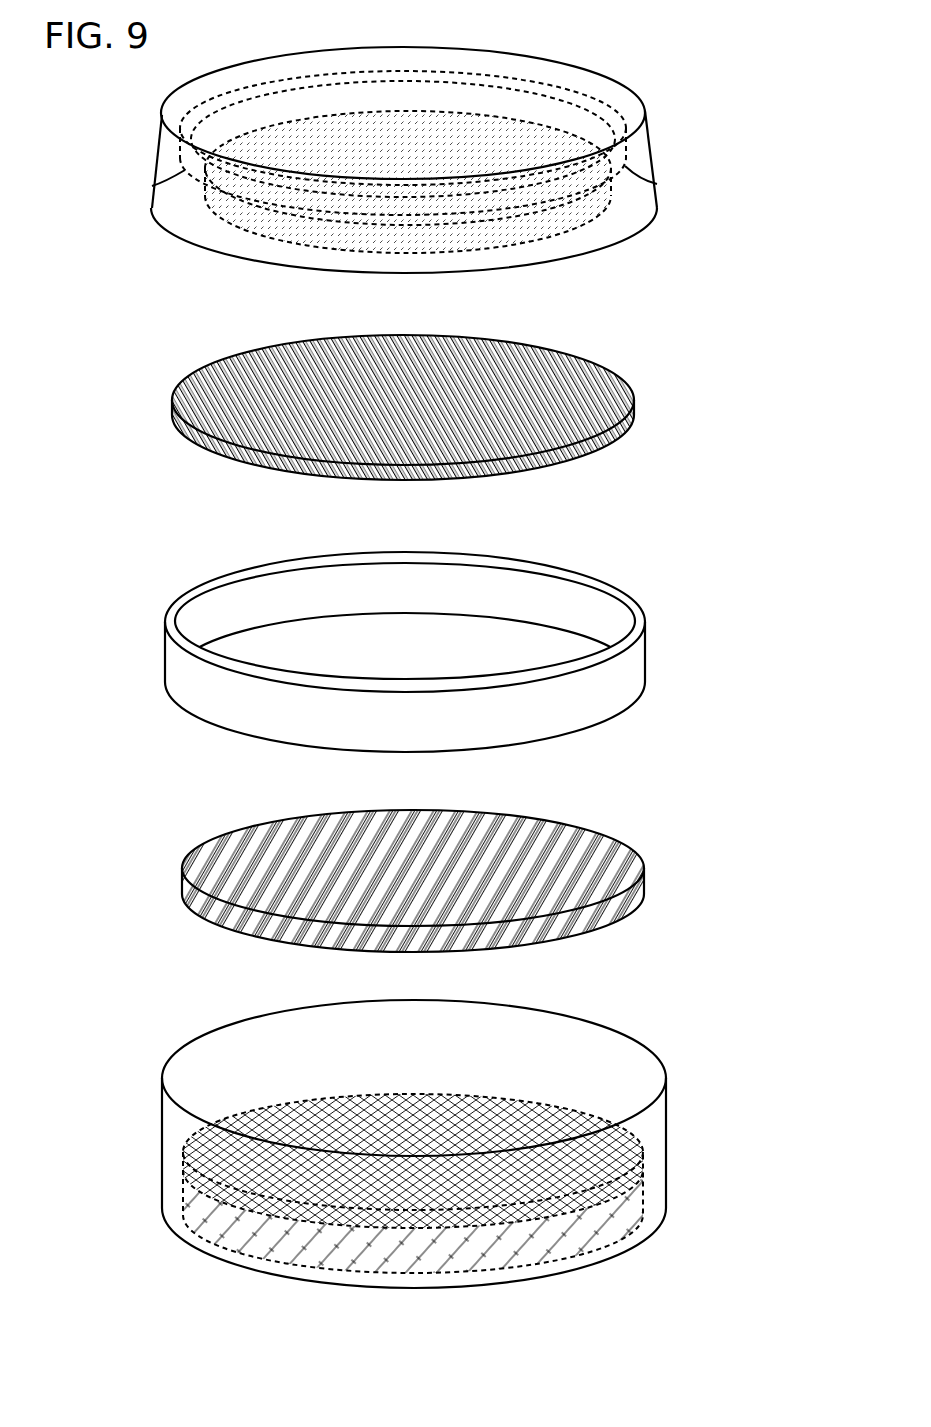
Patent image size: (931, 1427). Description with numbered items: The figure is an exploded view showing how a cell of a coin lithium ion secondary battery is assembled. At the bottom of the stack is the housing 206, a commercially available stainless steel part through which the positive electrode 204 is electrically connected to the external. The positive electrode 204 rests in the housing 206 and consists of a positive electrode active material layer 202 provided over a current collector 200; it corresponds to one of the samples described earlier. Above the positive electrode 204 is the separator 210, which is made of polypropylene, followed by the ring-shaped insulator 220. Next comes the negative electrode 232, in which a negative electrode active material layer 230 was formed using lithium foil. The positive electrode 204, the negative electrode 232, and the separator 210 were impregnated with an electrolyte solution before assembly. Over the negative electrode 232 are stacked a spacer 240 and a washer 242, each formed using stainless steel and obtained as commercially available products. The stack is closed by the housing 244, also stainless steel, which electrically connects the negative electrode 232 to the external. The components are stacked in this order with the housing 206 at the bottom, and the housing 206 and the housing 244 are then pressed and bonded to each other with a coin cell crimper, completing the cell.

The housing 244 is at (646, 112).
The washer 242 is at (182, 158).
The spacer 240 is at (192, 222).
The negative electrode active material layer 230 is at (634, 423).
The negative electrode 232 is at (728, 395).
The ring-shaped insulator 220 is at (648, 650).
The separator 210 is at (183, 897).
The housing 206 is at (668, 1130).
The positive electrode active material layer 202 is at (645, 1185).
The current collector 200 is at (645, 1216).
The positive electrode 204 is at (738, 1170).